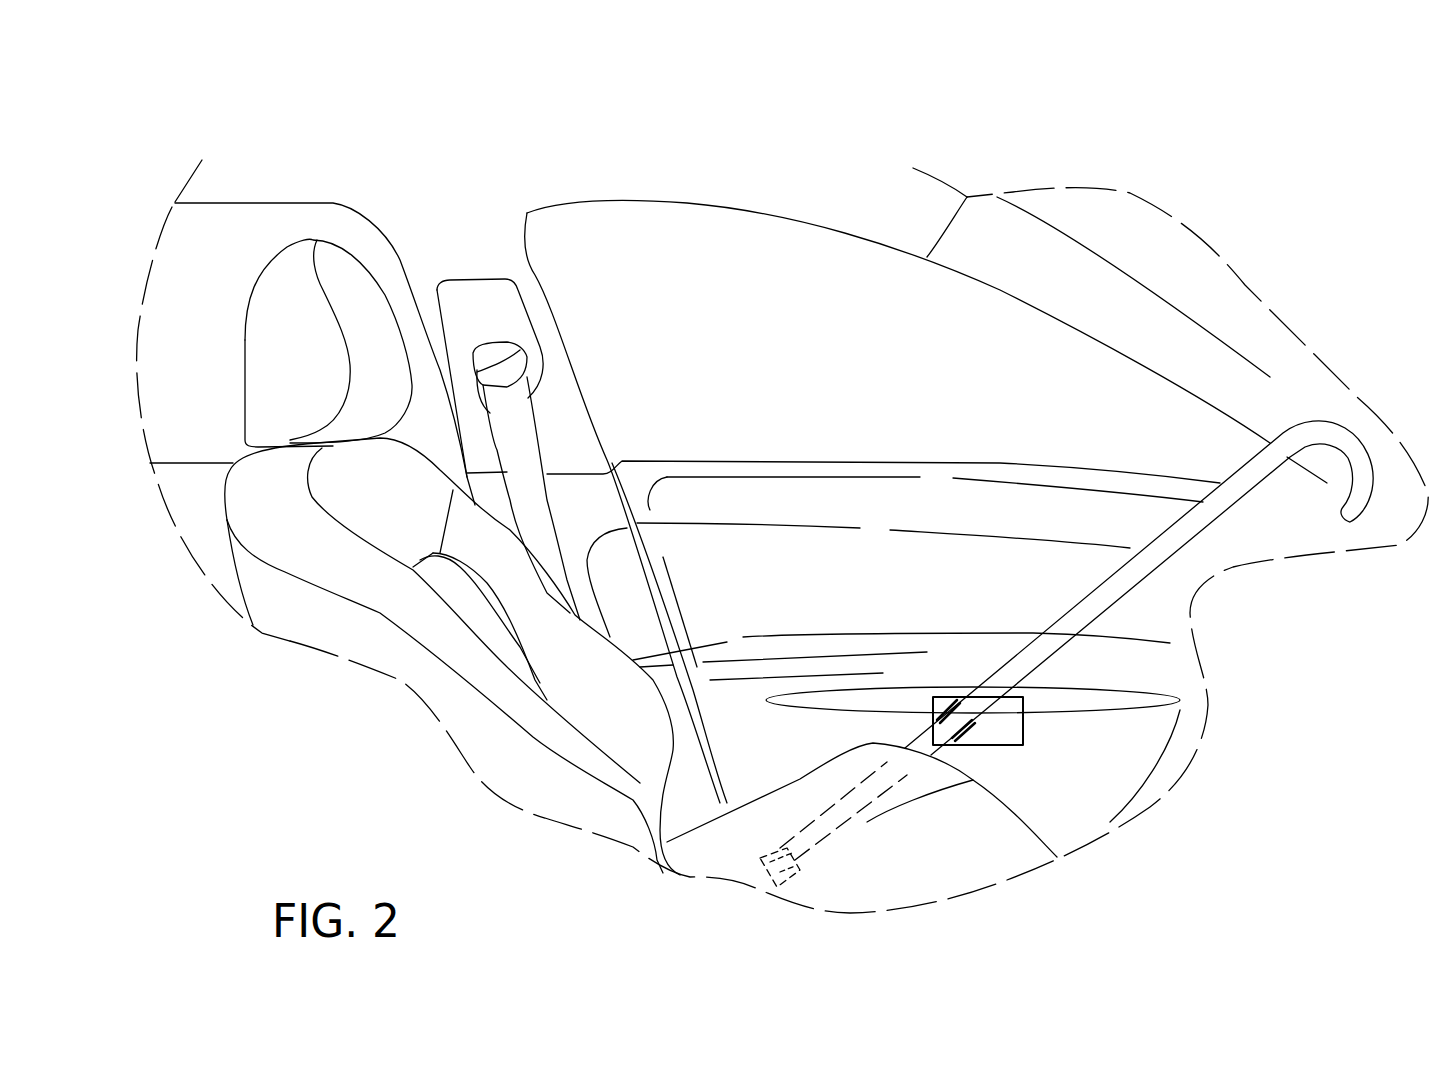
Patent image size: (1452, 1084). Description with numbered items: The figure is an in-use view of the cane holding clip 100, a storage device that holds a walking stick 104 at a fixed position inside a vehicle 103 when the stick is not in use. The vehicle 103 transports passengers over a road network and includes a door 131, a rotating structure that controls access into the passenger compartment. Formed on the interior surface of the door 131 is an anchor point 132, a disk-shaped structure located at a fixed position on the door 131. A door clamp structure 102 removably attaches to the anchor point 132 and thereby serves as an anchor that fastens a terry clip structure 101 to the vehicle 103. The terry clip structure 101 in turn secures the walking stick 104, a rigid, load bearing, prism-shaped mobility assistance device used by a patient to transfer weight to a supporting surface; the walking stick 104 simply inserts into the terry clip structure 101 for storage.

The cane holding clip 100 is at (333, 160).
The terry clip structure 101 is at (953, 735).
The door clamp structure 102 is at (1013, 723).
The vehicle 103 is at (1027, 243).
The walking stick 104 is at (1343, 433).
The door 131 is at (830, 497).
The anchor point 132 is at (902, 710).